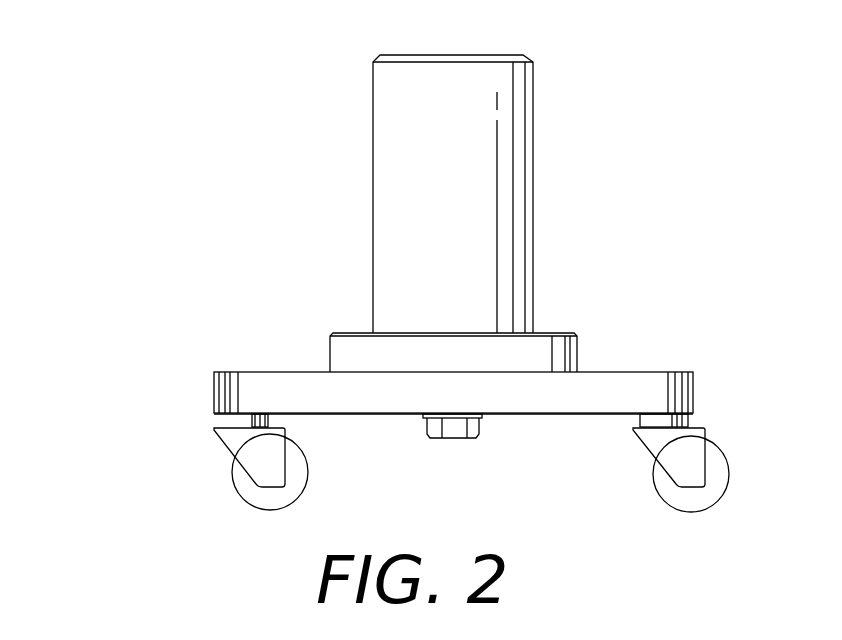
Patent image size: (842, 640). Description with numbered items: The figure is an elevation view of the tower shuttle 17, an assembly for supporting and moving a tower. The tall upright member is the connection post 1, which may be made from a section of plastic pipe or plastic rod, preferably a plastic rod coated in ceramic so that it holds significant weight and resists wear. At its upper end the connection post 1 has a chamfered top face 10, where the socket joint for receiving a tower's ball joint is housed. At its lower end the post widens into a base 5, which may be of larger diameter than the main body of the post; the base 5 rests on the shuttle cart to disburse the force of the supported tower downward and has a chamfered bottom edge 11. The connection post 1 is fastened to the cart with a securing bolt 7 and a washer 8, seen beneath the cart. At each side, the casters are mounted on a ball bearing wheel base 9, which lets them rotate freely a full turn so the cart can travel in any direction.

The connection post 1 is at (403, 185).
The base 5 is at (355, 360).
The securing bolt 7 is at (472, 428).
The washer 8 is at (425, 416).
The ball bearing wheel base 9 is at (233, 420).
The chamfered top face 10 is at (530, 58).
The chamfered bottom edge 11 is at (575, 334).
The tower shuttle 17 is at (112, 124).